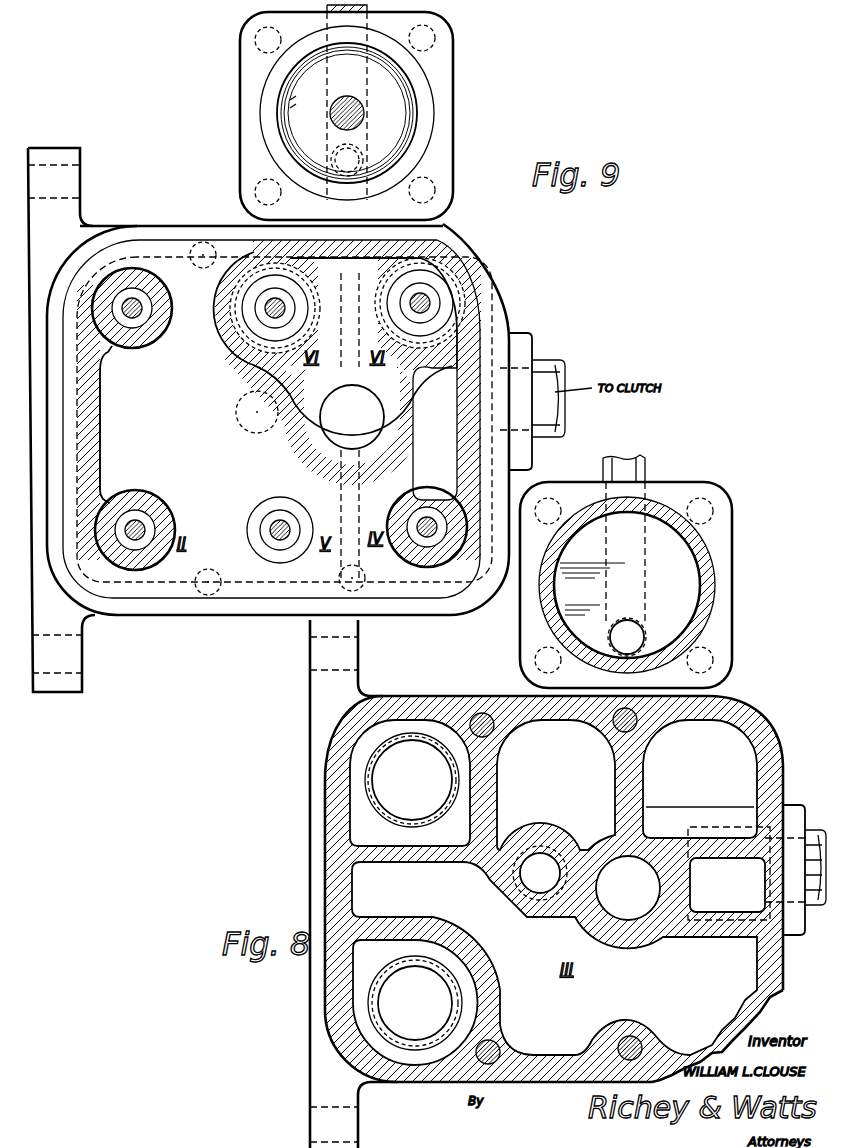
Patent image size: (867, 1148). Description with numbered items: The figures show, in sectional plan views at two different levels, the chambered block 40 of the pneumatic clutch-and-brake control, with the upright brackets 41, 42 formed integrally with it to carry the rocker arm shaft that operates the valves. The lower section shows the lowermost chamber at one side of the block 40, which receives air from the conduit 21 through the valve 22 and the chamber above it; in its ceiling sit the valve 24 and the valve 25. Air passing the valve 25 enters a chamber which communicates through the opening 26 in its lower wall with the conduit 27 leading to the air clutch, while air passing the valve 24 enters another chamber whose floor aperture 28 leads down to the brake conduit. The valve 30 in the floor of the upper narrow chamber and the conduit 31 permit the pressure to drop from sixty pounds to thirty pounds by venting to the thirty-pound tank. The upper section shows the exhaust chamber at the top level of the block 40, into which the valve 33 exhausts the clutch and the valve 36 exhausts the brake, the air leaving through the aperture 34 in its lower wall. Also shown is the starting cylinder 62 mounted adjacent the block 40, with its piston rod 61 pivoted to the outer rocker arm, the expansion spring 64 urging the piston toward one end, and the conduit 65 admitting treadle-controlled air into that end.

In FIG. 8, the conduit 21 is at (413, 1040).
In FIG. 9, the valve 22 is at (138, 527).
In FIG. 9, the valve 24 is at (283, 527).
In FIG. 9, the valve 25 is at (424, 525).
In FIG. 8, the opening 26 is at (739, 912).
In FIG. 9, the conduit 27 is at (545, 420).
In FIG. 8, the conduit 27 is at (813, 847).
In FIG. 8, the aperture 28 is at (545, 900).
In FIG. 9, the valve 30 is at (130, 317).
In FIG. 8, the conduit 31 is at (407, 820).
In FIG. 9, the valve 33 is at (430, 300).
In FIG. 9, the aperture 34 is at (370, 402).
In FIG. 8, the aperture 34 is at (645, 914).
In FIG. 9, the valve 36 is at (270, 320).
In FIG. 9, the chambered block 40 is at (248, 602).
In FIG. 8, the chambered block 40 is at (540, 1073).
In FIG. 9, the bracket 41 is at (462, 455).
In FIG. 9, the bracket 42 is at (95, 442).
In FIG. 9, the piston rod 61 is at (360, 110).
In FIG. 9, the cylinder 62 is at (413, 70).
In FIG. 8, the cylinder 62 is at (687, 542).
In FIG. 9, the expansion spring 64 is at (413, 108).
In FIG. 9, the conduit 65 is at (325, 77).
In FIG. 8, the conduit 65 is at (642, 472).